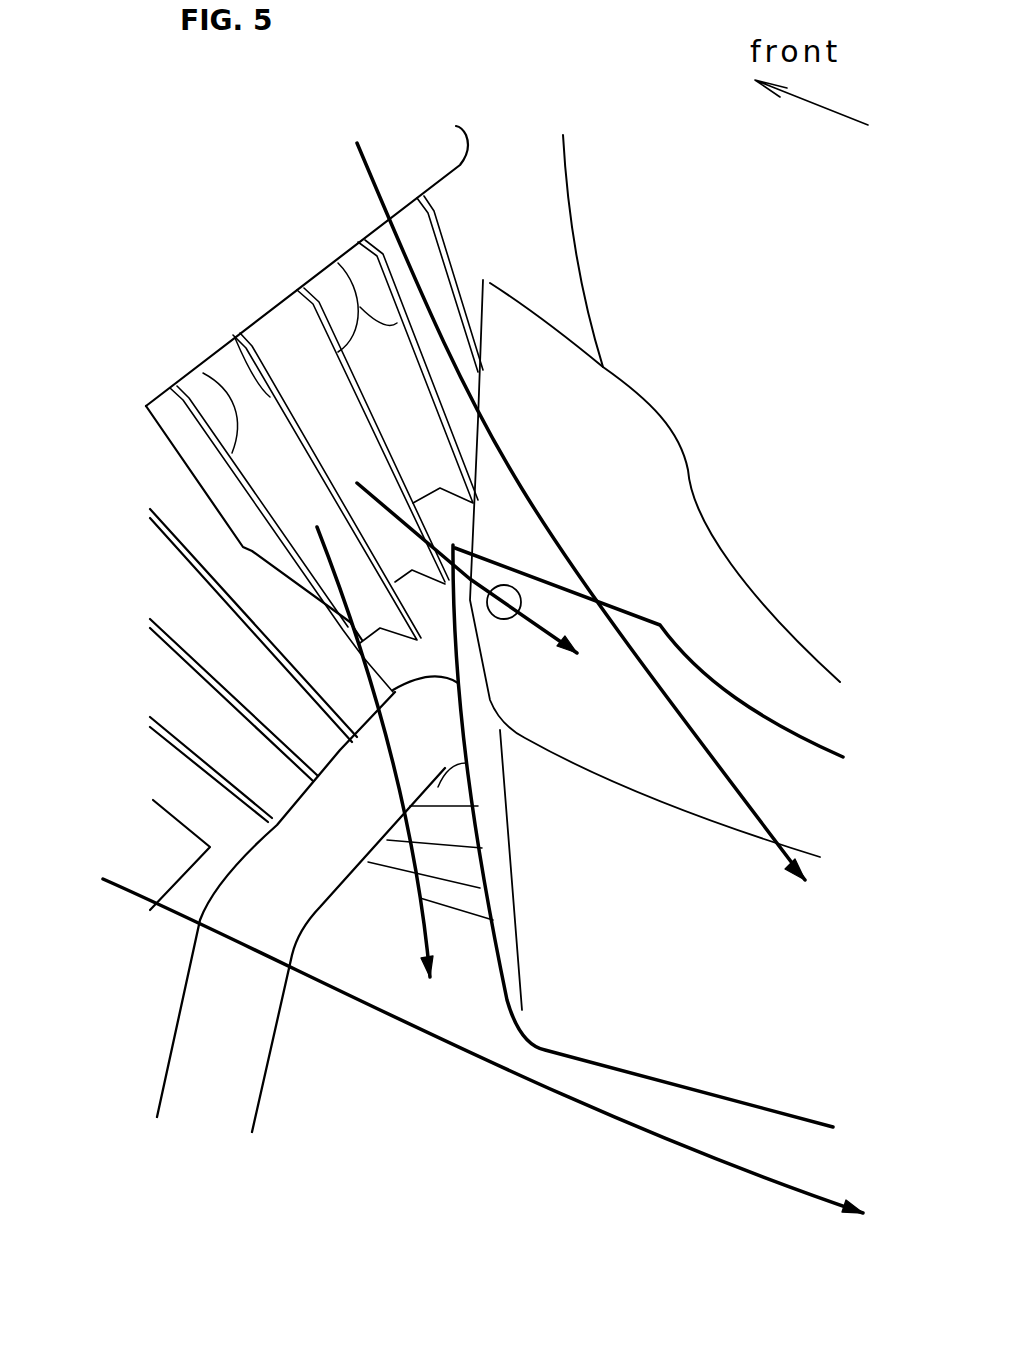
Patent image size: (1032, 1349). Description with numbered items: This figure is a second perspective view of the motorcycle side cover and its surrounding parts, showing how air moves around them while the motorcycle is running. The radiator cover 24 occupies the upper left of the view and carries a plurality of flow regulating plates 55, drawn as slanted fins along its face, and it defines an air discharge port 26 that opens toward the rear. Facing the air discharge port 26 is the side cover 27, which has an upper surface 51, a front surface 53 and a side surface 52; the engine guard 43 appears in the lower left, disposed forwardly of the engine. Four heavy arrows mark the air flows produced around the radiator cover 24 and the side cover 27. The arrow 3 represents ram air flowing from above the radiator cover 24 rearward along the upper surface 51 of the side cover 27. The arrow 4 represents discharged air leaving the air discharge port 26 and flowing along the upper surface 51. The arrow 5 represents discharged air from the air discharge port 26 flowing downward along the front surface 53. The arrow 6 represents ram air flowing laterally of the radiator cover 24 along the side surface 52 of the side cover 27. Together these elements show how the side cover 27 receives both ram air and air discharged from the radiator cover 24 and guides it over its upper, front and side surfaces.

The radiator cover 24 is at (433, 150).
The air discharge port 26 is at (297, 350).
The flow regulating plates 55 is at (343, 280).
The upper surface 51 is at (689, 683).
The side cover 27 is at (817, 712).
The engine guard 43 is at (177, 1015).
The front surface 53 is at (503, 860).
The side surface 52 is at (702, 1050).
The arrow 3 is at (581, 511).
The arrow 4 is at (456, 548).
The arrow 5 is at (360, 735).
The arrow 6 is at (151, 884).